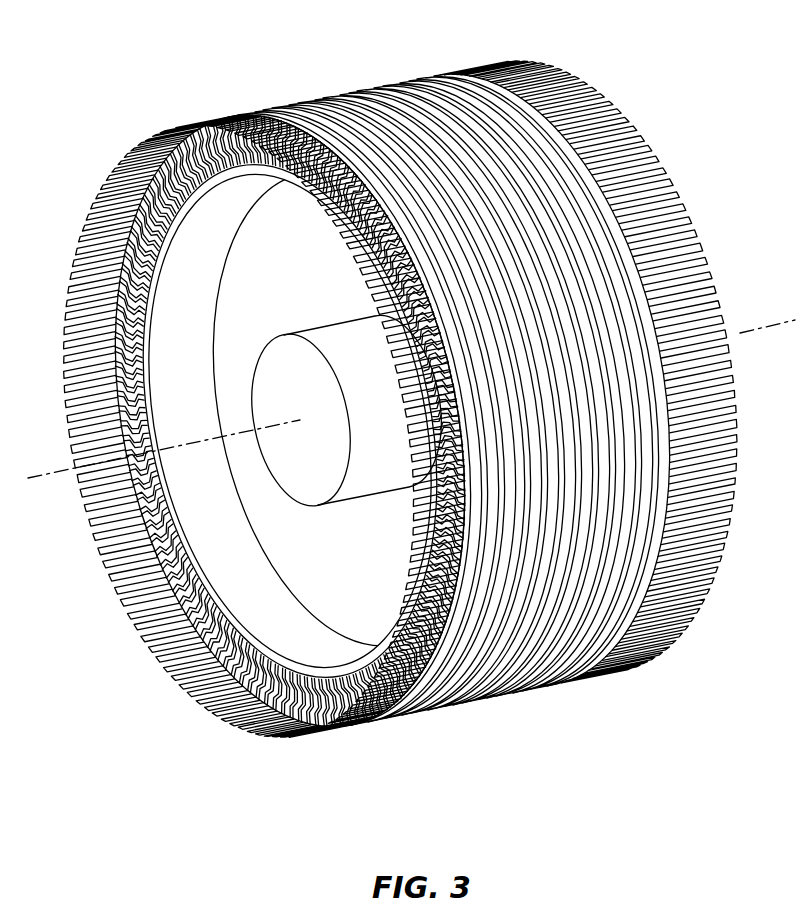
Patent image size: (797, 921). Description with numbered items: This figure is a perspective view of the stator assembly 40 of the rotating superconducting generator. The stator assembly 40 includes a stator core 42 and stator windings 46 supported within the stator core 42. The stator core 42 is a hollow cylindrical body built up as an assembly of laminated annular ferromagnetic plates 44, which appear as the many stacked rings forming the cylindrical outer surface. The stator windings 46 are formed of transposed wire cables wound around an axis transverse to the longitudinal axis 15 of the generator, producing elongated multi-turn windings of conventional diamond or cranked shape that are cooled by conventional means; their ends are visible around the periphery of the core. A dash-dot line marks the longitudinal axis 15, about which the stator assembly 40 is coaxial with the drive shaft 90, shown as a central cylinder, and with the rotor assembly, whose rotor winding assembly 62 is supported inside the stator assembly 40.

The stator assembly 40 is at (235, 51).
The stator core 42 is at (572, 177).
The laminated annular ferromagnetic plates 44 is at (518, 663).
The stator windings 46 is at (700, 578).
The rotor winding assembly 62 is at (154, 268).
The drive shaft 90 is at (304, 386).
The longitudinal axis 15 is at (190, 438).